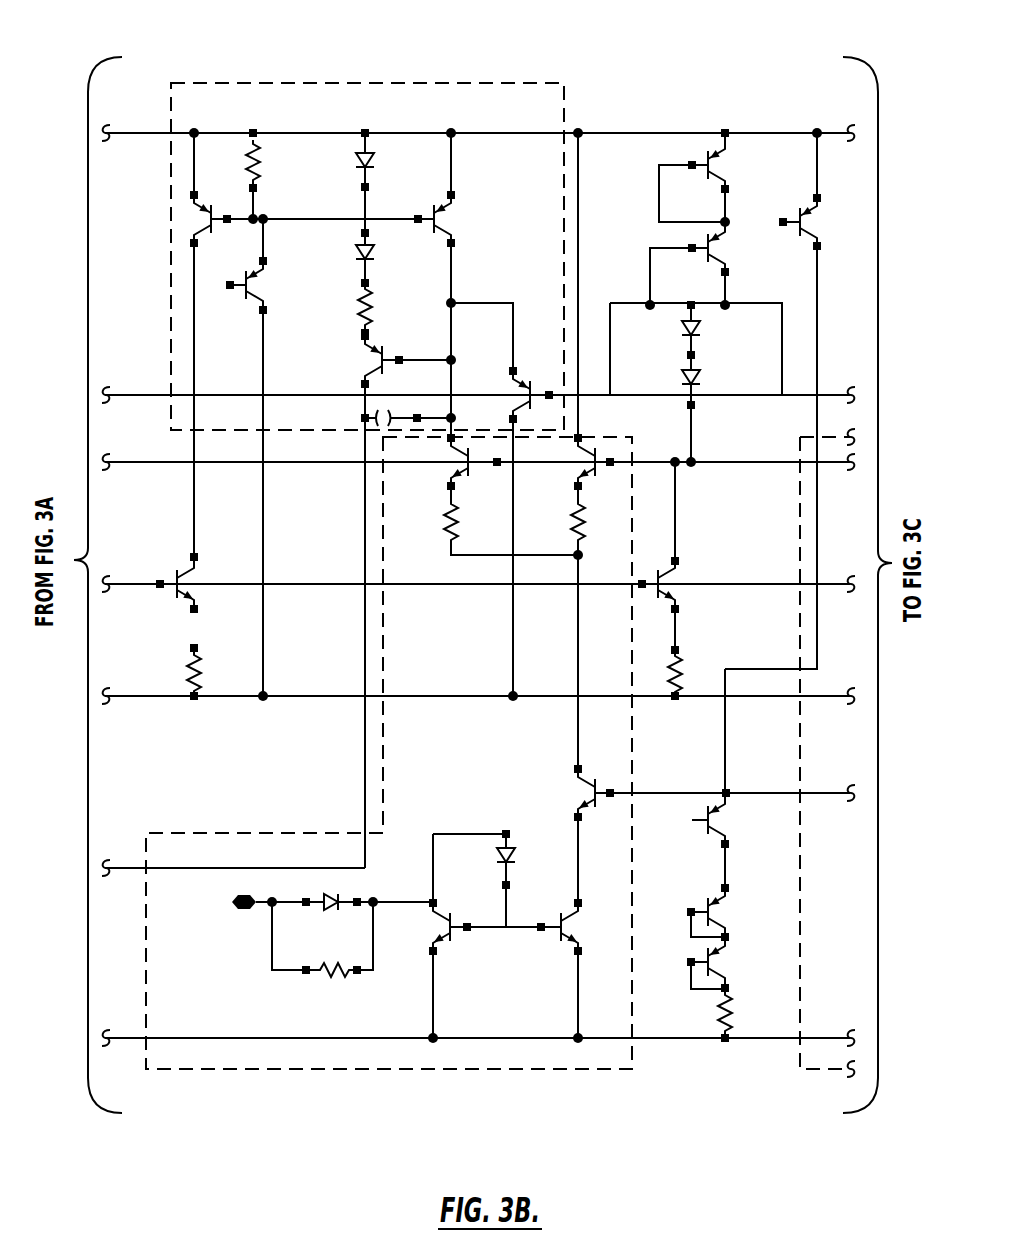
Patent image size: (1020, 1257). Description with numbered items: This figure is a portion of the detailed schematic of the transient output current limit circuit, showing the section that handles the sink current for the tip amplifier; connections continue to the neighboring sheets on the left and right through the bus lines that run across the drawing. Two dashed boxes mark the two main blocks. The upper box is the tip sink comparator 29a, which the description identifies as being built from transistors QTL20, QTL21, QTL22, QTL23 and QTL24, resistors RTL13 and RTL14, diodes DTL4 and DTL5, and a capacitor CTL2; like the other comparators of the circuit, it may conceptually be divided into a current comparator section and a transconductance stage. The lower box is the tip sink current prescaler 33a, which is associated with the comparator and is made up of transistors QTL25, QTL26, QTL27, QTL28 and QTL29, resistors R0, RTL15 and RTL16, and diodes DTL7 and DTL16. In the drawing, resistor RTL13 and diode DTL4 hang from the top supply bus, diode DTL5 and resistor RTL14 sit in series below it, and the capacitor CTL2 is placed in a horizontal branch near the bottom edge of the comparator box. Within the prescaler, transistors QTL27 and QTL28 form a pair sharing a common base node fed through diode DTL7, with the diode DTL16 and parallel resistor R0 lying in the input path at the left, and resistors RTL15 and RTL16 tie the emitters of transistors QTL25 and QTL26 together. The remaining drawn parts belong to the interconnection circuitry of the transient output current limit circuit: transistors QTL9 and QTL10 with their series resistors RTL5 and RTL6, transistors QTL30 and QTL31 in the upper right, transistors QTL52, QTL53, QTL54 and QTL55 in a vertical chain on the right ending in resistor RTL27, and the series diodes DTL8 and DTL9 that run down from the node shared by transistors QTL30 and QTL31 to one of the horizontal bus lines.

The tip sink comparator 29a is at (268, 82).
The tip sink current prescaler 33a is at (382, 1074).
The resistor RTL13 is at (229, 174).
The resistor RTL14 is at (337, 310).
The resistor RTL15 is at (423, 514).
The resistor RTL16 is at (550, 521).
The resistor RTL5 is at (167, 672).
The resistor RTL6 is at (652, 673).
The resistor RTL27 is at (697, 1016).
The resistor R0 is at (331, 989).
The diode DTL4 is at (389, 160).
The diode DTL5 is at (343, 256).
The diode DTL7 is at (529, 855).
The diode DTL8 is at (717, 330).
The diode DTL9 is at (717, 385).
The diode DTL16 is at (329, 874).
The capacitor CTL2 is at (377, 426).
The transistor QTL9 is at (201, 582).
The transistor QTL10 is at (690, 584).
The transistor QTL20 is at (180, 217).
The transistor QTL21 is at (463, 216).
The transistor QTL22 is at (277, 281).
The transistor QTL23 is at (350, 357).
The transistor QTL24 is at (507, 390).
The transistor QTL25 is at (478, 468).
The transistor QTL26 is at (568, 460).
The transistor QTL27 is at (425, 927).
The transistor QTL28 is at (582, 927).
The transistor QTL29 is at (567, 790).
The transistor QTL30 is at (732, 161).
The transistor QTL31 is at (732, 250).
The transistor QTL52 is at (735, 818).
The transistor QTL53 is at (823, 222).
The transistor QTL54 is at (732, 910).
The transistor QTL55 is at (732, 965).